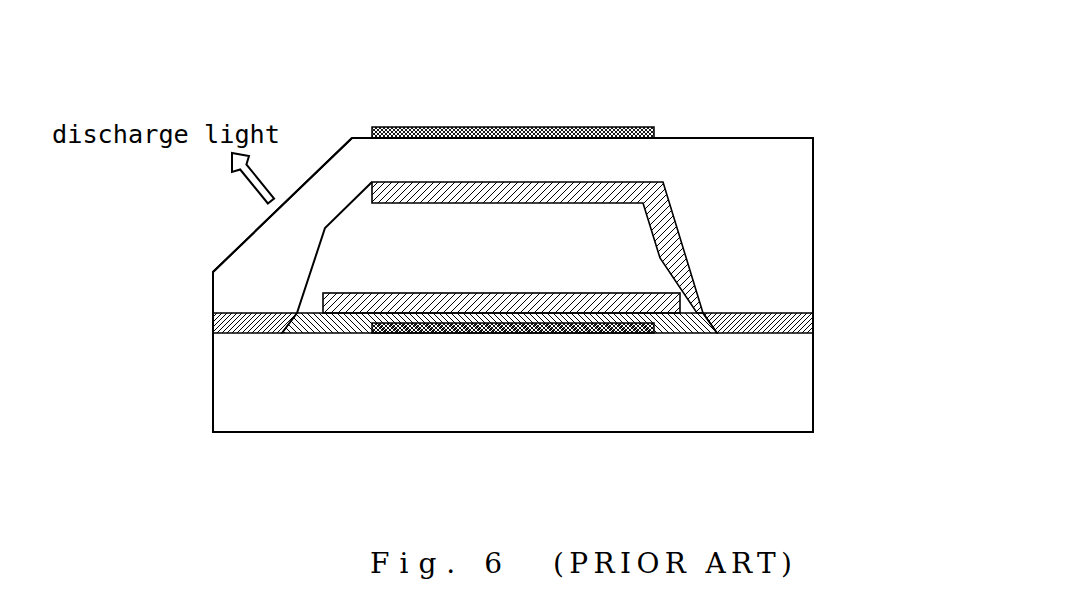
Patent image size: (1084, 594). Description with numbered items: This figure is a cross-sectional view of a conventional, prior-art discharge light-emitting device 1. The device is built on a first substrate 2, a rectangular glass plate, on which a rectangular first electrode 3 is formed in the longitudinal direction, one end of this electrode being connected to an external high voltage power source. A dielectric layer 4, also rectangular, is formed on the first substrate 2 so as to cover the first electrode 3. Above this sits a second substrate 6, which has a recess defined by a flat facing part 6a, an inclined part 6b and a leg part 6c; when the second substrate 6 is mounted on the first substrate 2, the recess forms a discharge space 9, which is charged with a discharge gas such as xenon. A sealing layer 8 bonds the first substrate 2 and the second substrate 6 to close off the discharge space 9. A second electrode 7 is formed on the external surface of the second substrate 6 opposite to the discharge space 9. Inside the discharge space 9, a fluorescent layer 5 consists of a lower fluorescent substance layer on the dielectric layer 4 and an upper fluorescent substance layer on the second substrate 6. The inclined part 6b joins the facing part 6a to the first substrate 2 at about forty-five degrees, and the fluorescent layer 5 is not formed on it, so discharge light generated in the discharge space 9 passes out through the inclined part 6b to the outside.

The discharge light-emitting device 1 is at (494, 48).
The first substrate 2 is at (790, 397).
The first electrode 3 is at (450, 335).
The dielectric layer 4 is at (320, 333).
The fluorescent layer 5 is at (690, 270).
The second substrate 6 is at (775, 207).
The facing part 6a is at (465, 160).
The inclined part 6b is at (287, 232).
The leg part 6c is at (783, 290).
The second electrode 7 is at (637, 127).
The sealing layer 8 is at (217, 325).
The discharge space 9 is at (377, 227).